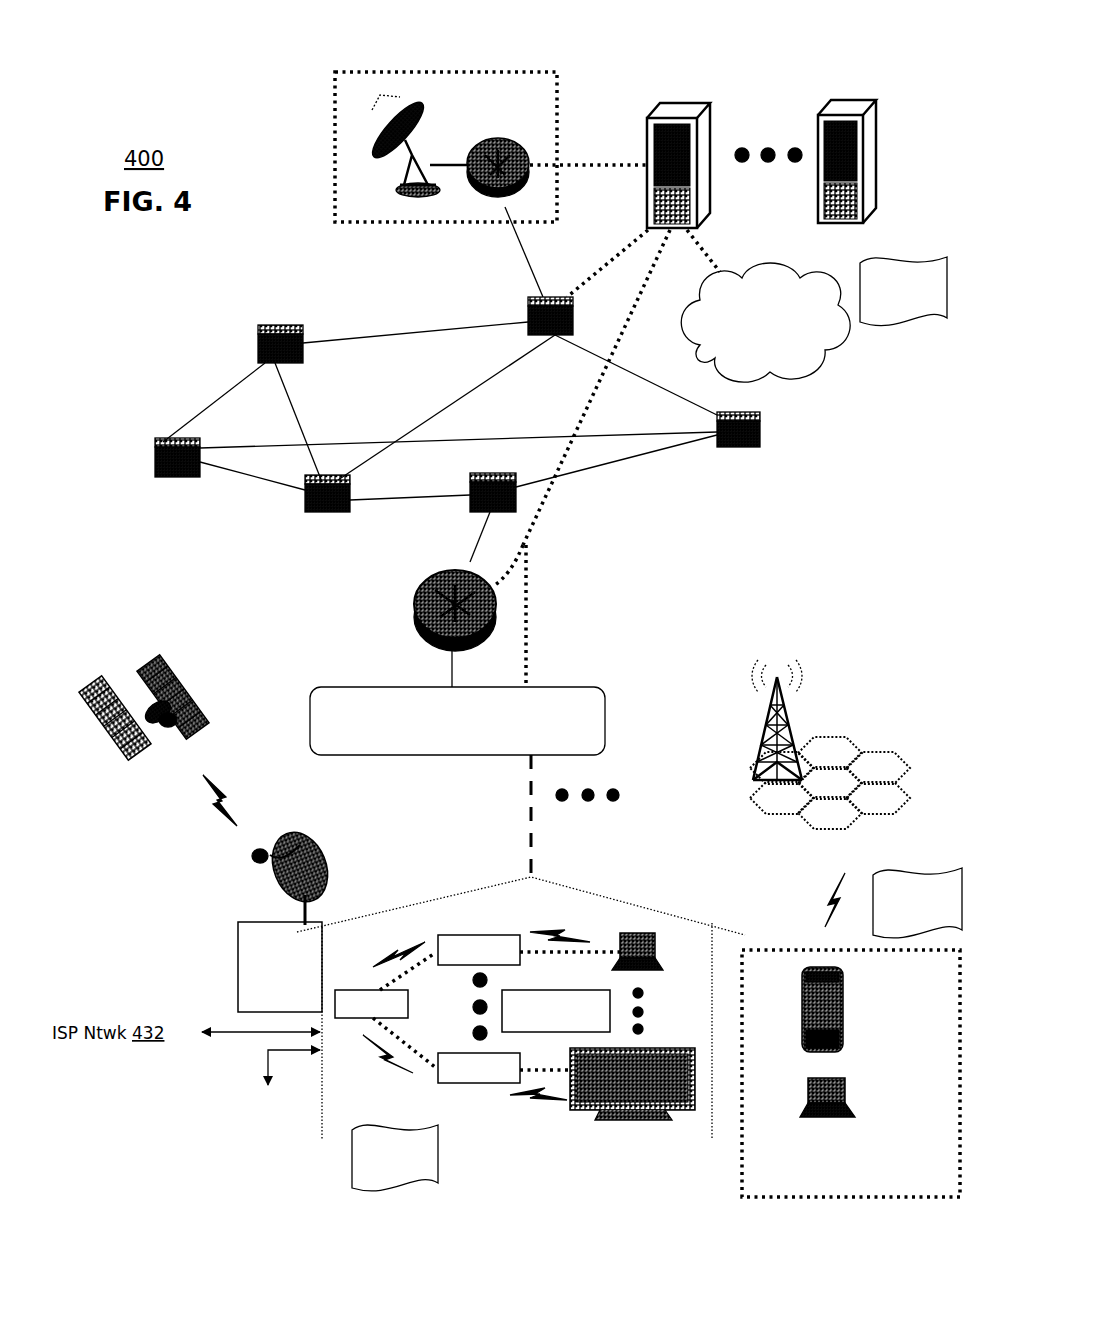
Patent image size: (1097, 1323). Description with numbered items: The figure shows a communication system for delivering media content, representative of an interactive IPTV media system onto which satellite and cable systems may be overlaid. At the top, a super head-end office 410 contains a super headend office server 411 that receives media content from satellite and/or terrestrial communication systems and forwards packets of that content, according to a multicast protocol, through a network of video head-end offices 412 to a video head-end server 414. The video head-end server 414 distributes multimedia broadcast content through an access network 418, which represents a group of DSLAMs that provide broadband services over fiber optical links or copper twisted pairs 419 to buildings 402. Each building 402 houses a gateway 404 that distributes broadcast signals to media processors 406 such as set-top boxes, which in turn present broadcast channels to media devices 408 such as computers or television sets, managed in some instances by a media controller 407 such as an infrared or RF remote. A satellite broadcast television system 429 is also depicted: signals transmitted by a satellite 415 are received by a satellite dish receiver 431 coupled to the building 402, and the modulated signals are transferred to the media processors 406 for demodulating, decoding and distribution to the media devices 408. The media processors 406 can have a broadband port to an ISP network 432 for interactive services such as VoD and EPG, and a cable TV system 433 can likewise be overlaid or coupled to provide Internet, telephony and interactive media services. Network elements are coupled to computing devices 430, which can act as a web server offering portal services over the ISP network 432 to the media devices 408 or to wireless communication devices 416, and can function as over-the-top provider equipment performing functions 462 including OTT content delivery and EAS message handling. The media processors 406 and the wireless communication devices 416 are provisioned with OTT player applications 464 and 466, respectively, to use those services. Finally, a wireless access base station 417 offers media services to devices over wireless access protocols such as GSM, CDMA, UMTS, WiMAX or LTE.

The building 402 is at (521, 1018).
The gateway 404 is at (385, 1007).
The media processor 406 is at (529, 1015).
The media controller 407 is at (572, 1011).
The media device 408 is at (645, 933).
The super head-end office 410 is at (335, 152).
The super headend office server 411 is at (472, 152).
The network of video head-end offices 412 is at (157, 458).
The video head-end server 414 is at (413, 610).
The satellite 415 is at (98, 717).
The wireless communication device 416 is at (853, 982).
The wireless access base station 417 is at (828, 738).
The access network 418 is at (605, 717).
The fiber optical links or copper twisted pairs 419 is at (530, 845).
The satellite broadcast television system 429 is at (233, 760).
The computing devices 430 is at (853, 93).
The satellite dish receiver 431 is at (220, 918).
The ISP network 432 is at (765, 322).
The cable TV system 433 is at (266, 1103).
The functions 462 is at (863, 223).
The OTT player application 464 is at (410, 1094).
The OTT player application 466 is at (845, 950).